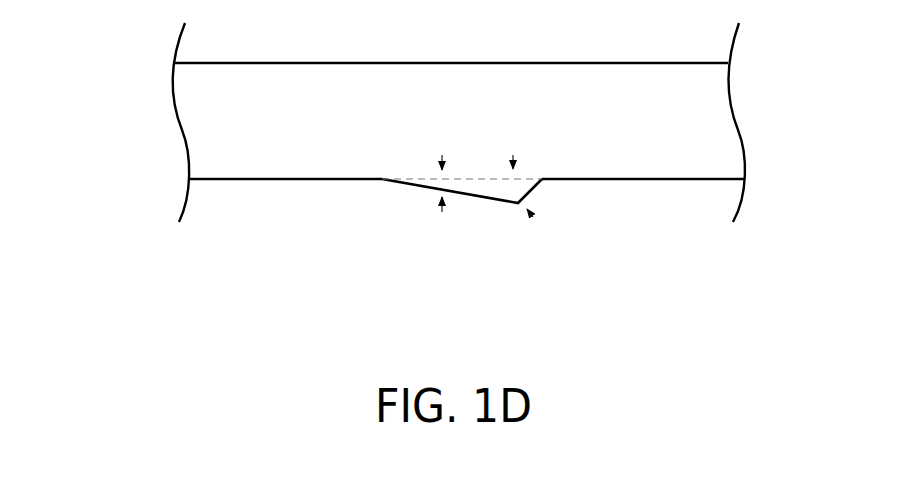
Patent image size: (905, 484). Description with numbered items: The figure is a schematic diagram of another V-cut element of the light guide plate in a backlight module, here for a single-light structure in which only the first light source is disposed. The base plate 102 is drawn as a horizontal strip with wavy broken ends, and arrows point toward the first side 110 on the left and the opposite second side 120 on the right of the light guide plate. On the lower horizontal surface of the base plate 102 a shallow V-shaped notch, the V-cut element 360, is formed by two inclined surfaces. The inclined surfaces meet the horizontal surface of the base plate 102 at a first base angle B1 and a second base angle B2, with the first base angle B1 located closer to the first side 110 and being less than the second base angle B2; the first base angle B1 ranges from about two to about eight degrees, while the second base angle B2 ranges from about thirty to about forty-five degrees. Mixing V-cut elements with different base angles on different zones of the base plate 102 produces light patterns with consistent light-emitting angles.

The base plate 102 is at (583, 127).
The first side 110 is at (84, 128).
The second side 120 is at (752, 123).
The recess / notch 360 is at (483, 200).
The first base angle B1 is at (440, 188).
The second base angle B2 is at (530, 190).